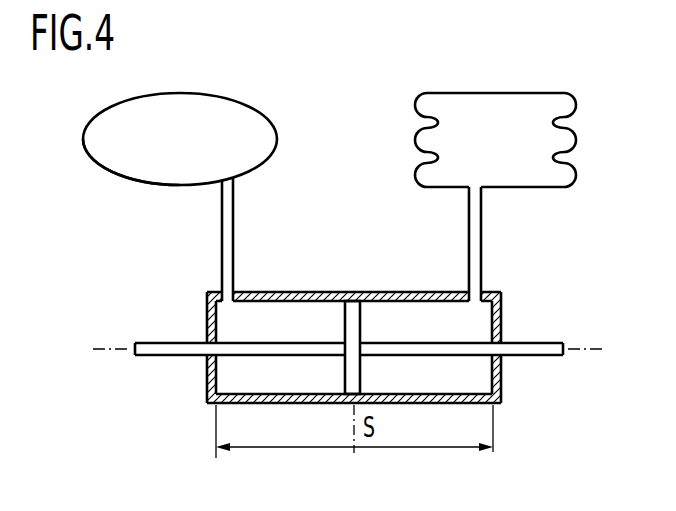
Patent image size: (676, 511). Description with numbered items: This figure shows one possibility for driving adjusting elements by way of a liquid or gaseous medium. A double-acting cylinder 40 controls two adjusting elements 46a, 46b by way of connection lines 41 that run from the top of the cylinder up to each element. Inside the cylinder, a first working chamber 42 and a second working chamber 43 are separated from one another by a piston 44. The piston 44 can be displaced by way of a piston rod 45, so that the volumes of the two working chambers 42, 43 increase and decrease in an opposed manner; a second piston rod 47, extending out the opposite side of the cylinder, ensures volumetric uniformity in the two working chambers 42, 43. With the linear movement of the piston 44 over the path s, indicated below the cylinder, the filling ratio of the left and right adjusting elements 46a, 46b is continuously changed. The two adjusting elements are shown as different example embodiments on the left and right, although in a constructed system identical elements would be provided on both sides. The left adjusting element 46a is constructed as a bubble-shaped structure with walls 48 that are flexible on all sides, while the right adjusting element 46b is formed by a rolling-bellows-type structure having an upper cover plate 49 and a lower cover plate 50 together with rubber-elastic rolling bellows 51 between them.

The double-acting cylinder 40 is at (188, 378).
The connection lines 41 is at (221, 234).
The first working chamber 42 is at (230, 377).
The second working chamber 43 is at (471, 378).
The piston 44 is at (352, 327).
The piston rod 45 is at (538, 343).
The adjusting element 46a is at (203, 82).
The adjusting element 46b is at (529, 160).
The second piston rod 47 is at (172, 348).
The walls 48 is at (97, 168).
The upper cover plate 49 is at (455, 93).
The lower cover plate 50 is at (548, 188).
The rolling bellows 51 is at (576, 137).